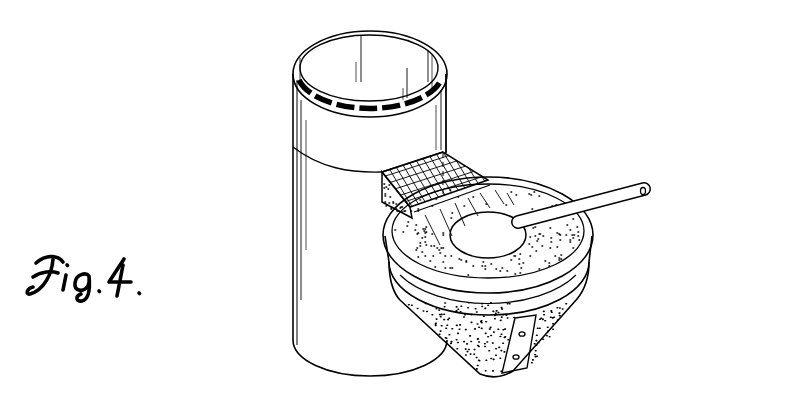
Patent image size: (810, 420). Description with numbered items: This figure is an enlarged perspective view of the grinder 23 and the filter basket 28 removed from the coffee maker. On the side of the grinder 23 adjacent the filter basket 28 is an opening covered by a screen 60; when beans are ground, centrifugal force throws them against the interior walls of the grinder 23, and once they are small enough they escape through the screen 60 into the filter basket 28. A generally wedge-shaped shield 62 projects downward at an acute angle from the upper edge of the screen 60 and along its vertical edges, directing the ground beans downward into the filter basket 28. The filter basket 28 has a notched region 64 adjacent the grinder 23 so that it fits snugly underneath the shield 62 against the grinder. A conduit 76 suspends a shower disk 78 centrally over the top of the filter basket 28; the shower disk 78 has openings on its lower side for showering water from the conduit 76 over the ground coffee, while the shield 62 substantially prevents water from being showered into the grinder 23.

The grinder 23 is at (345, 358).
The filter basket 28 is at (553, 331).
The screen 60 is at (443, 152).
The shield 62 is at (487, 178).
The notched region 64 is at (387, 245).
The conduit 76 is at (630, 186).
The shower disk 78 is at (517, 247).